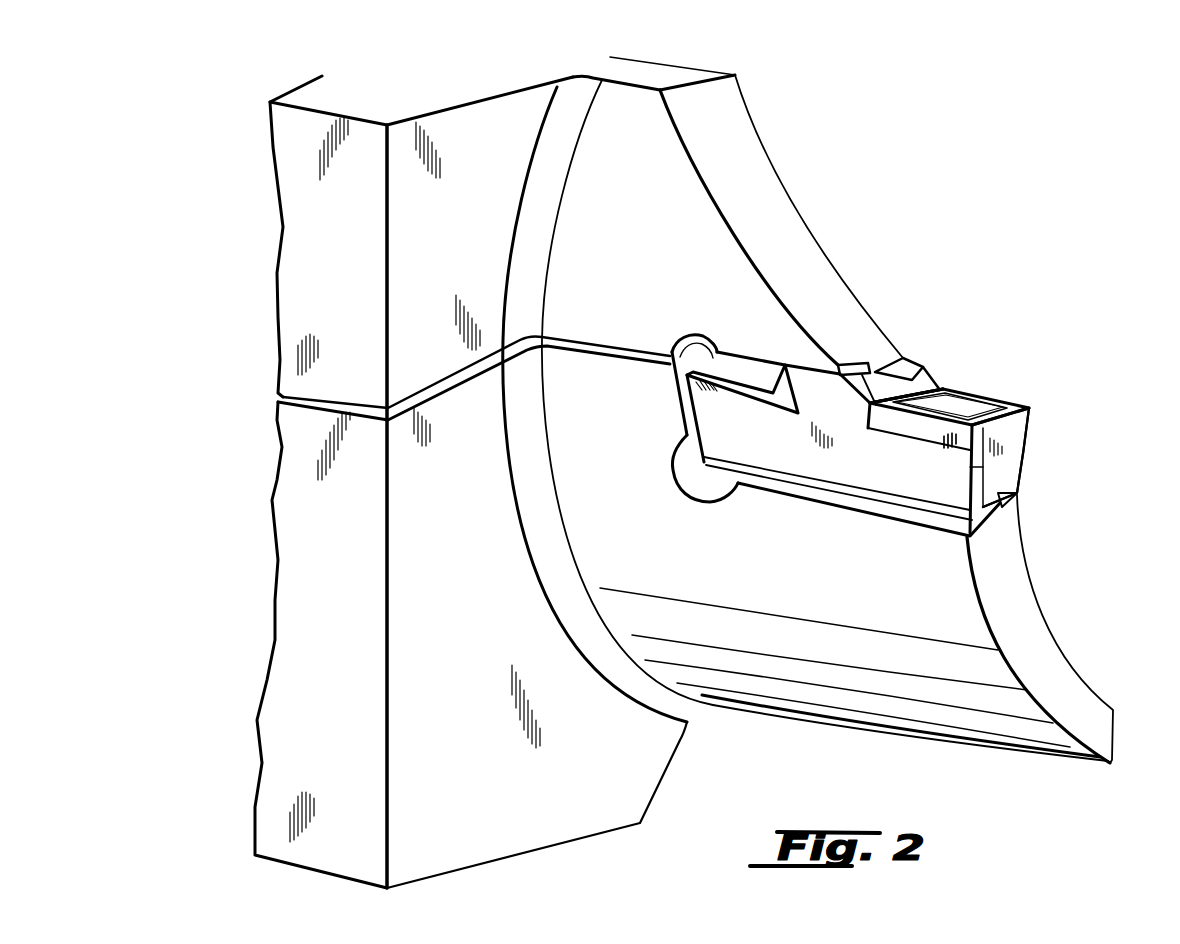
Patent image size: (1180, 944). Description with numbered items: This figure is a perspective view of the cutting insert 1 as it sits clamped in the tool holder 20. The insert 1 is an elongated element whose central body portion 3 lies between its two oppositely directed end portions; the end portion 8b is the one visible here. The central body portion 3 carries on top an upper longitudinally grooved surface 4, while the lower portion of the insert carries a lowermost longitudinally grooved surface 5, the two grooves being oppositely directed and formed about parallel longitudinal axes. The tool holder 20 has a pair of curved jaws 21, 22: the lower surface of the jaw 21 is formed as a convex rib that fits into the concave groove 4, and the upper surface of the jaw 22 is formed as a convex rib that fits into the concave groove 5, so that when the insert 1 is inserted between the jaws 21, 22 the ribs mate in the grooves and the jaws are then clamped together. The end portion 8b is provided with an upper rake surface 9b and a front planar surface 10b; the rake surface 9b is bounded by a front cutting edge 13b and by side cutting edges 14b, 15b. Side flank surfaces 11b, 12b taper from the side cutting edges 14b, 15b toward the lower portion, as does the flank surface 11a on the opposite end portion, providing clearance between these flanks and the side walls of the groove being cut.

The cutting insert 1 is at (1012, 382).
The central body portion 3 is at (842, 470).
The upper longitudinally grooved surface 4 is at (912, 357).
The lowermost longitudinally grooved surface 5 is at (1003, 507).
The end portion 8b is at (987, 383).
The upper rake surface 9b is at (1005, 416).
The front planar surface 10b is at (1002, 465).
The side flank surface 11a is at (737, 403).
The side flank surface 11b is at (940, 438).
The side flank surface 12b is at (1015, 400).
The front cutting edge 13b is at (1000, 420).
The side cutting edge 14b is at (937, 442).
The side cutting edge 15b is at (958, 388).
The tool holder 20 is at (302, 315).
The jaw 21 is at (780, 208).
The jaw 22 is at (1027, 608).